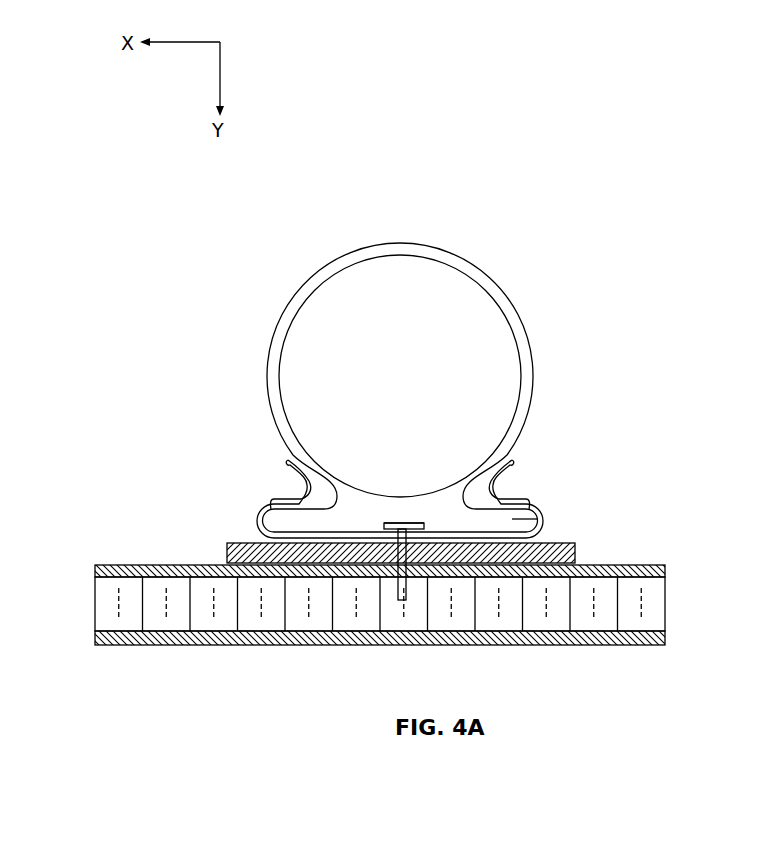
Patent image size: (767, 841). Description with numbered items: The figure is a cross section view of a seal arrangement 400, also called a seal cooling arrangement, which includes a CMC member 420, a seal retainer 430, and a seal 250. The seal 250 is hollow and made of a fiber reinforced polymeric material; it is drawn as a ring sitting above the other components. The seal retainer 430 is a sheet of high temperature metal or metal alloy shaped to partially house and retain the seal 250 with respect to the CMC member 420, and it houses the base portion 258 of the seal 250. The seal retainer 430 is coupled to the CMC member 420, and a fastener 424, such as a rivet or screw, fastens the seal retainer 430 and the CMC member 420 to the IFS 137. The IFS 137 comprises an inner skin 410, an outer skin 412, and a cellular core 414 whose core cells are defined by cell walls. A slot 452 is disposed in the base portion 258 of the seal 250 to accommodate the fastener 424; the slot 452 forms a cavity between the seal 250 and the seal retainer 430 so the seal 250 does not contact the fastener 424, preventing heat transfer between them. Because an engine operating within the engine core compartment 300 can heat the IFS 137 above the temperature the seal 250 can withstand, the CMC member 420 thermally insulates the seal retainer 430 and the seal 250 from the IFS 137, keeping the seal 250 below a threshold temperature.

The IFS 137 is at (97, 556).
The seal 250 is at (388, 243).
The base portion 258 is at (540, 520).
The engine core compartment 300 is at (641, 415).
The seal arrangement 400 is at (509, 229).
The inner skin 410 is at (660, 566).
The outer skin 412 is at (660, 638).
The cellular core 414 is at (657, 604).
The CMC member 420 is at (229, 550).
The fastener 424 is at (402, 525).
The seal retainer 430 is at (538, 496).
The slot 452 is at (380, 525).